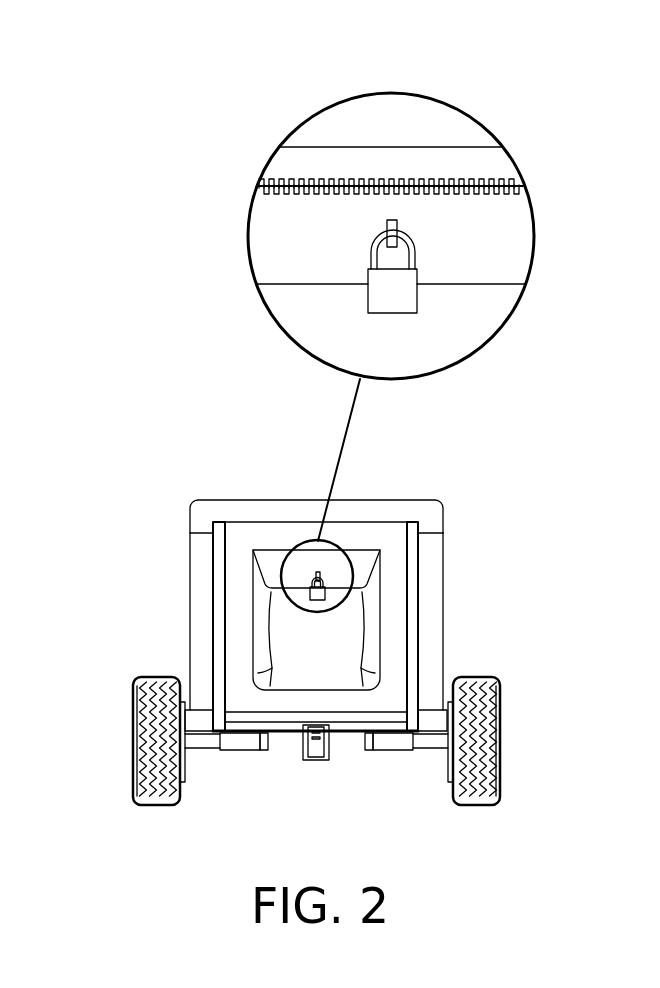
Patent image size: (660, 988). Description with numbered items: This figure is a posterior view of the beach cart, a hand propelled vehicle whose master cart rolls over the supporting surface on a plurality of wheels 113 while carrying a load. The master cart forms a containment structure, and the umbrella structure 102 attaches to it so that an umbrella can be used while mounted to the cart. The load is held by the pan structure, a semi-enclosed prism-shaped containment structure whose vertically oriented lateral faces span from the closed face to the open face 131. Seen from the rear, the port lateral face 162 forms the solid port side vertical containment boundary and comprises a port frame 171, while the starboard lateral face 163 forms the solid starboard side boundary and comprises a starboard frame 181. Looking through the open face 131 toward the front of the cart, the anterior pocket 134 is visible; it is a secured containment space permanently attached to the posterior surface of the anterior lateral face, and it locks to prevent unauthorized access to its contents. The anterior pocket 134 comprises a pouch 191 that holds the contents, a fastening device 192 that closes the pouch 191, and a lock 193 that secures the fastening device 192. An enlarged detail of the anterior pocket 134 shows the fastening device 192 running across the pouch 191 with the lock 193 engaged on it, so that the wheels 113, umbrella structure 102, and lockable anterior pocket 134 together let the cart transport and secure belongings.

The umbrella structure 102 is at (310, 760).
The wheels 113 is at (488, 742).
The open face 131 is at (367, 523).
The anterior pocket 134 is at (345, 663).
The port lateral face 162 is at (212, 638).
The starboard lateral face 163 is at (433, 613).
The port frame 171 is at (212, 580).
The starboard frame 181 is at (420, 565).
The pouch 191 is at (443, 339).
The fastening device 192 is at (415, 180).
The lock 193 is at (409, 297).